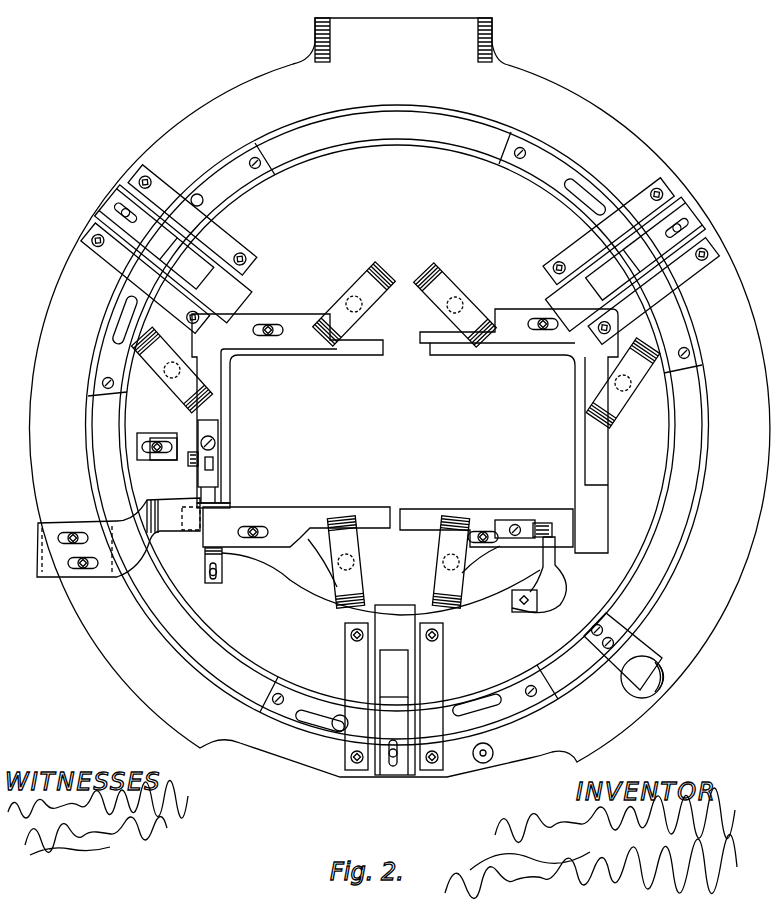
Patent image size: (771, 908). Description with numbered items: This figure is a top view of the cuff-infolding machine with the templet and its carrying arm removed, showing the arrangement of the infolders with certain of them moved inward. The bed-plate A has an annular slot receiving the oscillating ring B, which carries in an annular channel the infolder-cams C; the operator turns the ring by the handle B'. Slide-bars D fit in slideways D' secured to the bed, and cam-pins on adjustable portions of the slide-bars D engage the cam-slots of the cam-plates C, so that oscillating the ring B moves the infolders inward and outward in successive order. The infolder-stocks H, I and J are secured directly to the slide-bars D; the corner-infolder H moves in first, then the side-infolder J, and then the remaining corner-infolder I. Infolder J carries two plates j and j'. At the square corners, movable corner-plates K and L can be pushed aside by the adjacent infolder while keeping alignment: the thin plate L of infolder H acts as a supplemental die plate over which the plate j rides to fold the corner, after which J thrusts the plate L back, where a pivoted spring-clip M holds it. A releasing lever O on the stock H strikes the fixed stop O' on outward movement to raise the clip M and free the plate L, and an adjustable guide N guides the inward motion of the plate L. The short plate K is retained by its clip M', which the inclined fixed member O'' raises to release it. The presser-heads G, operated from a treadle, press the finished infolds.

The bed-plate A is at (399, 397).
The oscillating ring B is at (397, 434).
The handle B' is at (624, 664).
The infolder-cams C is at (359, 445).
The slide-bars D is at (400, 480).
The slideways D' is at (396, 467).
The presser-heads G is at (420, 306).
The corner-infolder stock H is at (287, 408).
The corner-infolder I is at (519, 431).
The side-infolder J is at (462, 577).
The infolding-plate j is at (296, 534).
The infolding-plate j' is at (486, 516).
The corner-plate K is at (550, 520).
The corner-plate L is at (227, 498).
The spring-clip M is at (232, 461).
The clip M' is at (516, 507).
The adjustable guide N is at (172, 530).
The releasing lever-plate O is at (183, 472).
The fixed stop O' is at (156, 462).
The fixed member O'' is at (556, 575).